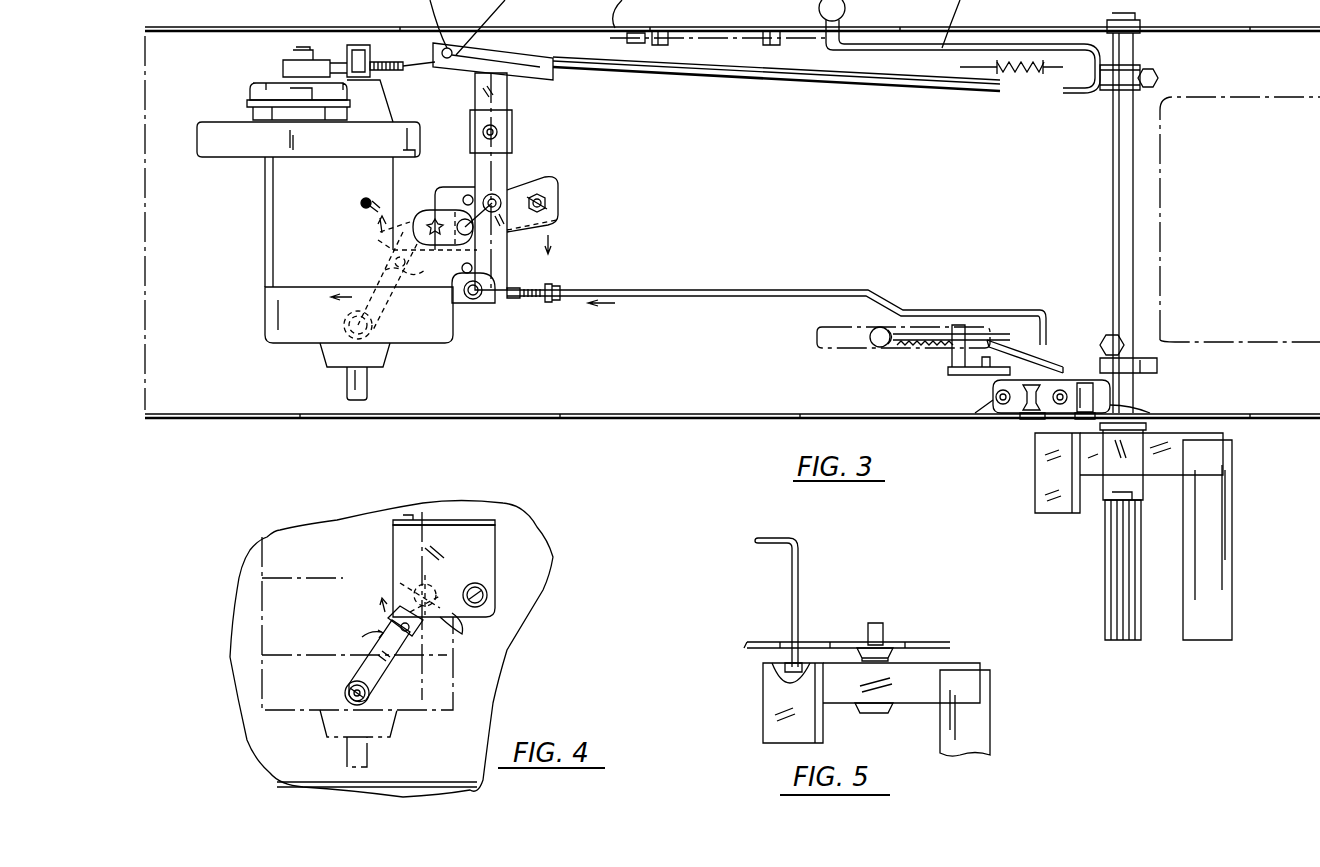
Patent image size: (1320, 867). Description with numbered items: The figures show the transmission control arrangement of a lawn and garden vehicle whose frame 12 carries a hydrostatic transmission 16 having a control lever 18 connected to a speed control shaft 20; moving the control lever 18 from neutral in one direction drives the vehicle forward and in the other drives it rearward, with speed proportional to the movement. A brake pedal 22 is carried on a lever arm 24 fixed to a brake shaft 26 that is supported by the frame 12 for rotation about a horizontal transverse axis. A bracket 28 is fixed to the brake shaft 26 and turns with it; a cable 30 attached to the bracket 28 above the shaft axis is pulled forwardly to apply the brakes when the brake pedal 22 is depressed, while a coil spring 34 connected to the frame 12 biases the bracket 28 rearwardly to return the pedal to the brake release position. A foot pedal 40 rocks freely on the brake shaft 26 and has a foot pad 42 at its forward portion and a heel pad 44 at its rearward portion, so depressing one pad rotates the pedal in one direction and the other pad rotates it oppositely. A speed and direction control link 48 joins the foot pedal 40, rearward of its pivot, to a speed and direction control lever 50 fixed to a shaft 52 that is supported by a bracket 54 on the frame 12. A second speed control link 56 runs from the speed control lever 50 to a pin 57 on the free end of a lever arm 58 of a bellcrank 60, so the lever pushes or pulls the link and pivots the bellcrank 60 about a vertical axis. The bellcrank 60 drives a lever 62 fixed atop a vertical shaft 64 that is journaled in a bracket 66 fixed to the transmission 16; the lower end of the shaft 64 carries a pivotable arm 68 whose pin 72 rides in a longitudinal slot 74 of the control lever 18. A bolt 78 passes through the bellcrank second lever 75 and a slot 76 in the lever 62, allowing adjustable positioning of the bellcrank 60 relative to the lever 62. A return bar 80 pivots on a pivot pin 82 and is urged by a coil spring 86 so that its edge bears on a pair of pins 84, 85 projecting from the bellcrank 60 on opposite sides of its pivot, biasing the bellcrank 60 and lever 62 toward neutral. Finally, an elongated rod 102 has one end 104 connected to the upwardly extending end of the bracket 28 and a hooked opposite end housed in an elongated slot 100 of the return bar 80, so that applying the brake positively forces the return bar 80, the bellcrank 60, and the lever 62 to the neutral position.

In FIG. 3, the frame 12 is at (738, 418).
In FIG. 4, the frame 12 is at (445, 782).
In FIG. 5, the frame 12 is at (935, 643).
In FIG. 3, the transmission 16 is at (265, 254).
In FIG. 4, the transmission 16 is at (262, 623).
In FIG. 3, the control lever 18 is at (352, 308).
In FIG. 4, the control lever 18 is at (372, 652).
In FIG. 3, the speed control shaft 20 is at (344, 328).
In FIG. 4, the speed control shaft 20 is at (346, 690).
In FIG. 3, the brake pedal 22 is at (1105, 542).
In FIG. 3, the lever arm 24 is at (1138, 488).
In FIG. 5, the lever arm 24 is at (862, 645).
In FIG. 3, the brake shaft 26 is at (1135, 175).
In FIG. 5, the brake shaft 26 is at (885, 630).
In FIG. 3, the bracket 28 is at (1152, 76).
In FIG. 3, the cable 30 is at (968, 91).
In FIG. 3, the coil spring 34 is at (790, 42).
In FIG. 3, the foot pedal 40 is at (1225, 436).
In FIG. 5, the foot pedal 40 is at (980, 665).
In FIG. 3, the foot pad 42 is at (1232, 537).
In FIG. 5, the foot pad 42 is at (990, 700).
In FIG. 3, the heel pad 44 is at (1040, 500).
In FIG. 5, the heel pad 44 is at (765, 712).
In FIG. 3, the speed and direction control link 48 is at (990, 380).
In FIG. 5, the speed and direction control link 48 is at (800, 573).
In FIG. 3, the speed and direction control lever 50 is at (950, 374).
In FIG. 3, the shaft 52 is at (1045, 422).
In FIG. 3, the bracket 54 is at (997, 415).
In FIG. 3, the second speed control link 56 is at (710, 290).
In FIG. 3, the pin 57 is at (483, 300).
In FIG. 3, the lever arm 58 is at (464, 305).
In FIG. 3, the bellcrank 60 is at (440, 192).
In FIG. 3, the lever 62 is at (553, 178).
In FIG. 3, the shaft 64 is at (465, 232).
In FIG. 4, the shaft 64 is at (484, 590).
In FIG. 3, the bracket 66 is at (400, 150).
In FIG. 4, the bracket 66 is at (495, 545).
In FIG. 3, the pivotable arm 68 is at (388, 252).
In FIG. 4, the pivotable arm 68 is at (463, 636).
In FIG. 3, the pin 72 is at (392, 263).
In FIG. 4, the pin 72 is at (408, 633).
In FIG. 3, the slot 74 is at (383, 276).
In FIG. 4, the slot 74 is at (420, 588).
In FIG. 3, the second lever 75 is at (548, 193).
In FIG. 3, the slot 76 is at (548, 212).
In FIG. 3, the bolt 78 is at (548, 205).
In FIG. 3, the return bar 80 is at (475, 80).
In FIG. 3, the pivot pin 82 is at (497, 130).
In FIG. 3, the pin 84 is at (466, 195).
In FIG. 3, the pin 85 is at (436, 230).
In FIG. 3, the coil spring 86 is at (364, 208).
In FIG. 3, the elongated slot 100 is at (553, 79).
In FIG. 3, the elongated rod 102 is at (800, 86).
In FIG. 3, the end 104 is at (1062, 92).